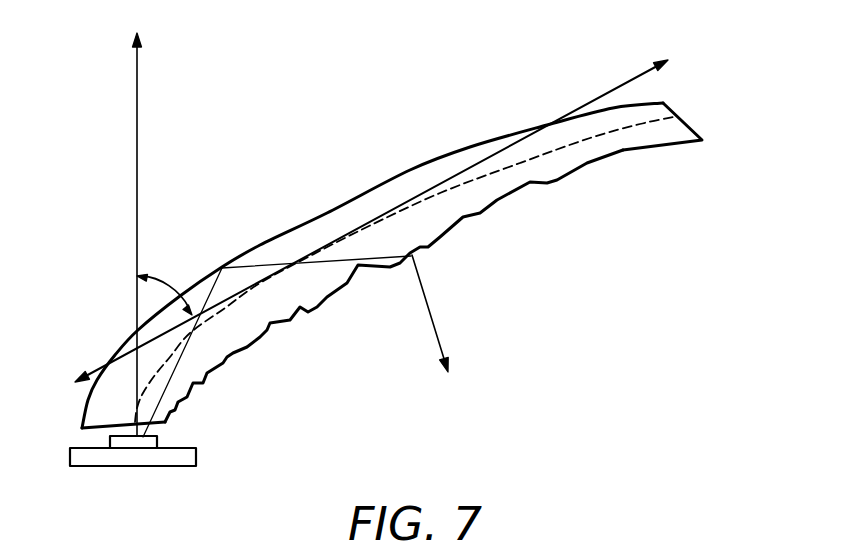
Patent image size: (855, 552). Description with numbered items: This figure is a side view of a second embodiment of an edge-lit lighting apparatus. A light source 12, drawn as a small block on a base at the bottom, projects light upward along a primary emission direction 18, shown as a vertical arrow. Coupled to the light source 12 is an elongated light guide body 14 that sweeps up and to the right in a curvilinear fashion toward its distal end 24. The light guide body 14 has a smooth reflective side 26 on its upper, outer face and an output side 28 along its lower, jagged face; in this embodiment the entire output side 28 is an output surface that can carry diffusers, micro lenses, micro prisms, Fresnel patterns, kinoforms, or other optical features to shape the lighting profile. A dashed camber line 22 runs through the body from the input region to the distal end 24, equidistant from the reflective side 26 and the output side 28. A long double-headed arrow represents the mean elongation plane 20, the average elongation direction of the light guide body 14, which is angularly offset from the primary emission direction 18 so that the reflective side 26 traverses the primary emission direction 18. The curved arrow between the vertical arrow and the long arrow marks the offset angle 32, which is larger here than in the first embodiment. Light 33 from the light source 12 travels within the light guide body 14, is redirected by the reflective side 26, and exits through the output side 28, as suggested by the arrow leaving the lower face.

The light source 12 is at (196, 457).
The light guide body 14 is at (418, 260).
The primary emission direction 18 is at (137, 103).
The mean elongation plane 20 is at (620, 84).
The camber line 22 is at (590, 140).
The distal end 24 is at (693, 121).
The reflective side 26 is at (408, 167).
The output side 28 is at (357, 283).
The offset angle 32 is at (186, 298).
The light 33 is at (438, 329).